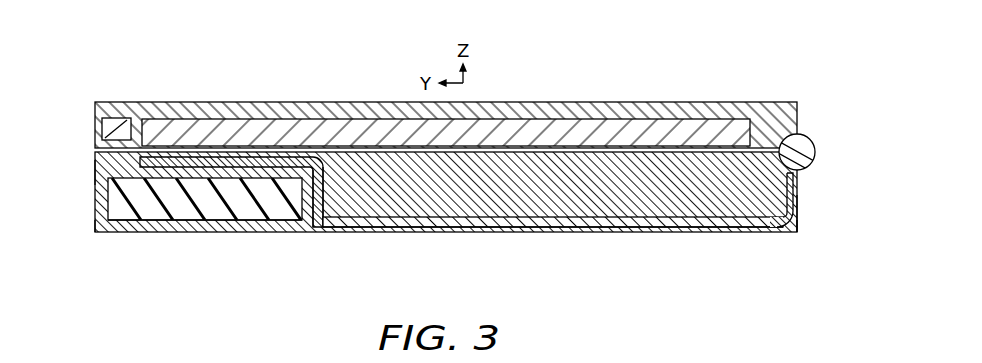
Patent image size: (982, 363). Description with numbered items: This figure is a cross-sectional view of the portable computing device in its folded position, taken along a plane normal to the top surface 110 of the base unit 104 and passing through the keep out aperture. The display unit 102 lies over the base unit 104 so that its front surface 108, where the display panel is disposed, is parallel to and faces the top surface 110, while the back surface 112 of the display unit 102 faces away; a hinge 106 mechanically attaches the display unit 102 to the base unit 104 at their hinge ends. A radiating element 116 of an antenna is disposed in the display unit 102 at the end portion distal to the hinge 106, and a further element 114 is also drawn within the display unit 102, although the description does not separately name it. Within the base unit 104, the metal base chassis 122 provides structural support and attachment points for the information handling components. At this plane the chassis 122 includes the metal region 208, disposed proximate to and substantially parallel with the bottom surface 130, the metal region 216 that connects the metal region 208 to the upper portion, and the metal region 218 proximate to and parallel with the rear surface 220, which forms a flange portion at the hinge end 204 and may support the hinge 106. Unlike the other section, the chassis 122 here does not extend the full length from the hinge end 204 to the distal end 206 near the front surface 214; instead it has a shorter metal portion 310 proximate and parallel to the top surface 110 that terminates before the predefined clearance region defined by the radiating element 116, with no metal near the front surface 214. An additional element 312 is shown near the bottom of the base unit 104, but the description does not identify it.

The display unit 102 is at (647, 101).
The base unit 104 is at (582, 237).
The hinge 106 is at (807, 134).
The front surface / display panel 108 is at (131, 145).
The top surface 110 is at (395, 150).
The back surface 112 is at (180, 101).
The display panel 114 is at (340, 120).
The radiating element 116 is at (116, 119).
The metal base chassis 122 is at (453, 221).
The bottom surface 130 is at (150, 221).
The hinge end 204 is at (795, 236).
The distal end 206 is at (95, 236).
The metal region 208 is at (668, 222).
The front surface 214 is at (95, 172).
The metal region 216 is at (322, 203).
The metal region 218 is at (794, 183).
The rear surface 220 is at (798, 212).
The metal portion 310 is at (228, 168).
The adhesive layer 312 is at (121, 222).